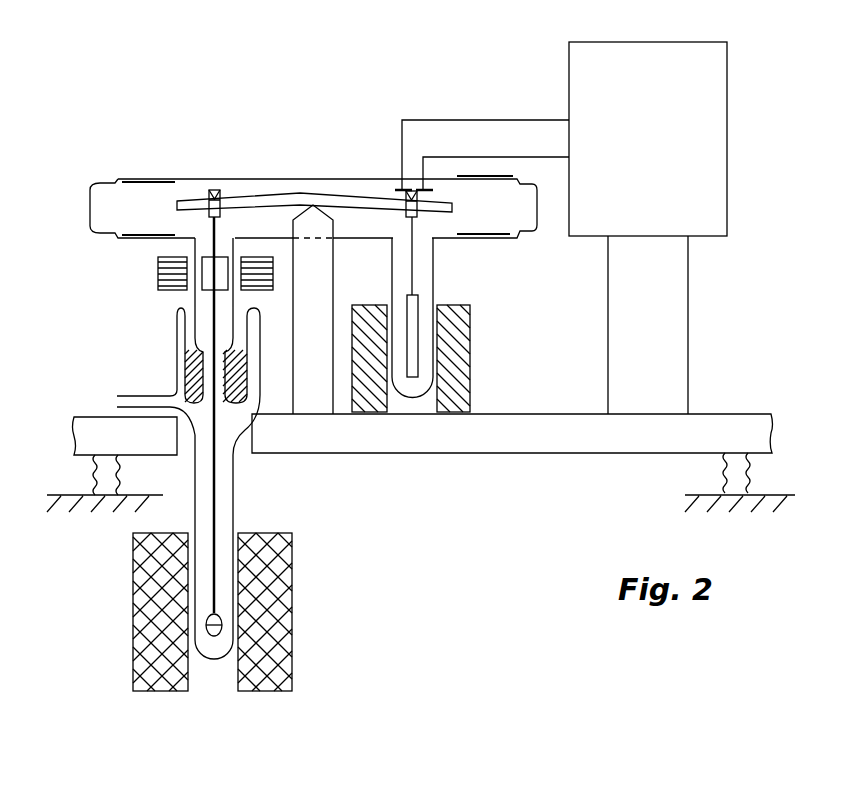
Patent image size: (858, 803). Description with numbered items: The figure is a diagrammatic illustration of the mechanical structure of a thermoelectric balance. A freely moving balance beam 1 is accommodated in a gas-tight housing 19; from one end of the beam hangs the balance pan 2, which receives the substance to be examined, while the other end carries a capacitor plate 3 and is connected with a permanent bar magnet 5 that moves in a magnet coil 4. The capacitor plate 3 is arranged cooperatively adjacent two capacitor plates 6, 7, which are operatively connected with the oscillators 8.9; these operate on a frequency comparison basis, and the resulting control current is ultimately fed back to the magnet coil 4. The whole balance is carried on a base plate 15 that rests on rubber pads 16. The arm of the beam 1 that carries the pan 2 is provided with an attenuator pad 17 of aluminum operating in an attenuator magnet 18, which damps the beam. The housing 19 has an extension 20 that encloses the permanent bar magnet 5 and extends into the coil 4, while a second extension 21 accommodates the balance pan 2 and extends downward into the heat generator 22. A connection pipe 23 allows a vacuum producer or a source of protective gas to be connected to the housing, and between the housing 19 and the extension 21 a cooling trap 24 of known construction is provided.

The balance beam 1 is at (252, 200).
The balance pan 2 is at (222, 623).
The capacitor plate 3 is at (430, 197).
The magnet coil 4 is at (463, 388).
The permanent bar magnet 5 is at (413, 335).
The capacitor plate 6 is at (397, 188).
The capacitor plate 7 is at (422, 188).
The oscillators 8.9 is at (695, 205).
The base plate 15 is at (558, 438).
The rubber pads 16 is at (105, 474).
The attenuator pad 17 is at (217, 282).
The attenuator magnet 18 is at (160, 277).
The gas-tight housing 19 is at (187, 179).
The extension 20 is at (433, 278).
The extension 21 is at (233, 483).
The heat generator 22 is at (268, 650).
The connection pipe 23 is at (130, 403).
The cooling trap 24 is at (242, 368).